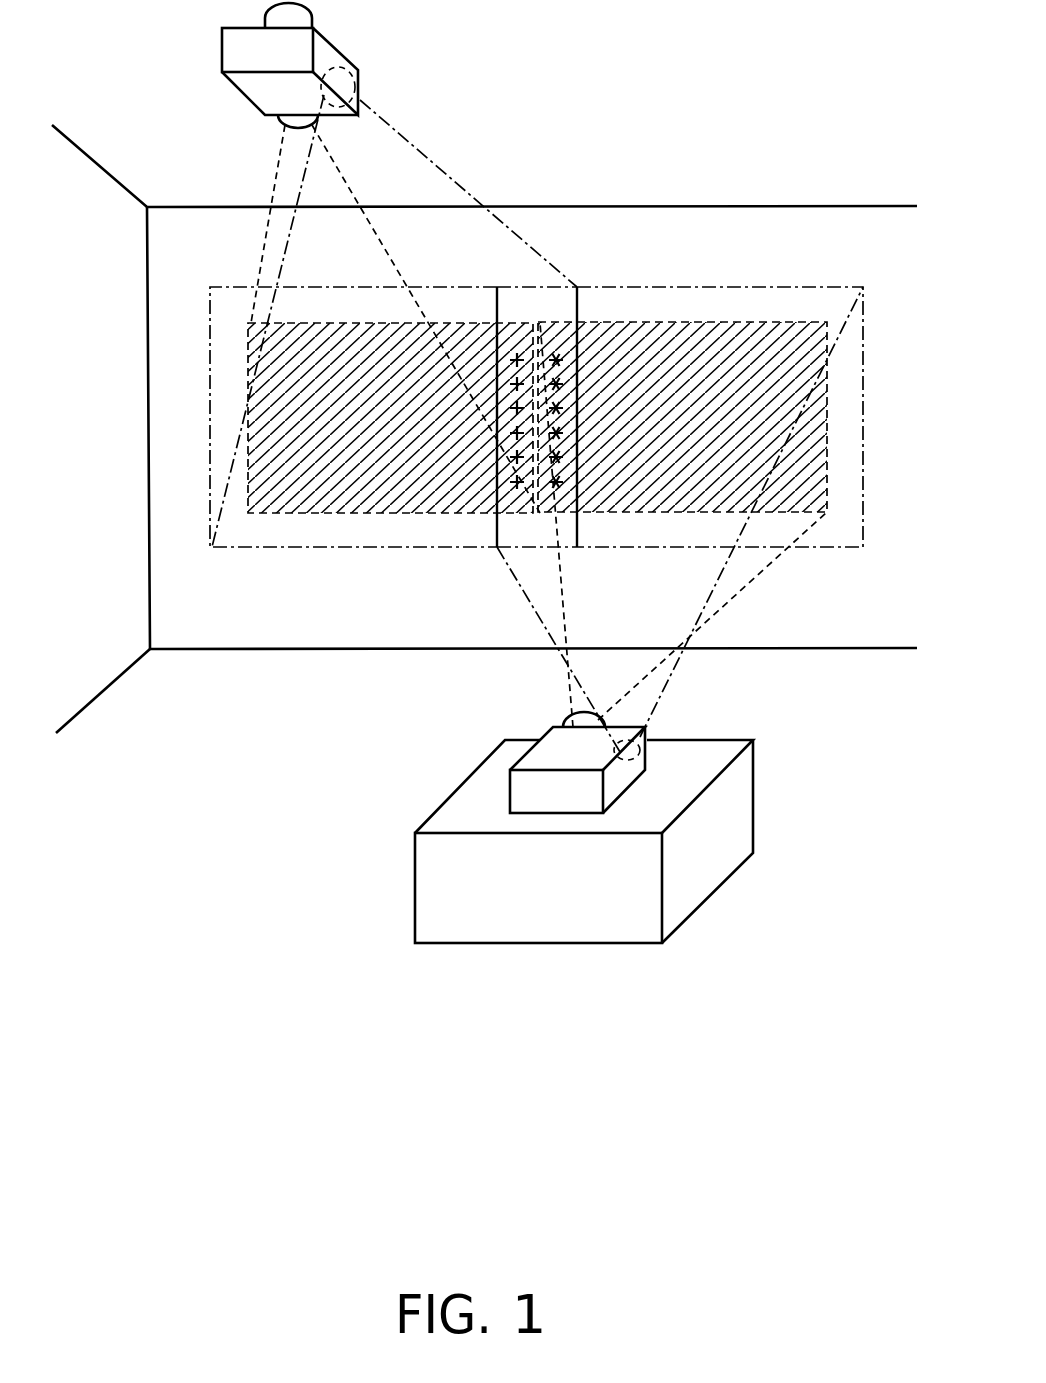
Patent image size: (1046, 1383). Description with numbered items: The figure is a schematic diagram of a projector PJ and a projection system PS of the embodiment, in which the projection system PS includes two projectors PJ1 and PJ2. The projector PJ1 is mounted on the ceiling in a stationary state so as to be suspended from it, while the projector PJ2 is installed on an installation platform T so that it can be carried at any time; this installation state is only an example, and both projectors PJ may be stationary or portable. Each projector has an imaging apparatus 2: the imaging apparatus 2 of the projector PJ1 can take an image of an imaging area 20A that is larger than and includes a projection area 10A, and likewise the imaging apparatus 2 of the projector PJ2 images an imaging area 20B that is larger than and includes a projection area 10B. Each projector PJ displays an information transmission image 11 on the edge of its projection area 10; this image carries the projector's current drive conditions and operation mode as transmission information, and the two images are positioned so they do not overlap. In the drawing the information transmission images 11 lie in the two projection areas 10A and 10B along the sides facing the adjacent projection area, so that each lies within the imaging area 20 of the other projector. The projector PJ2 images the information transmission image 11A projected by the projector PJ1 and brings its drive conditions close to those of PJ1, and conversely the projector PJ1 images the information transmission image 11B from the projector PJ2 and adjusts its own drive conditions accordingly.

The projection system PS is at (647, 100).
The projector PJ is at (339, 451).
The projector PJ1 is at (212, 37).
The projector PJ2 is at (557, 805).
The imaging apparatus 2 is at (358, 68).
The projection area 10 is at (537, 421).
The projection area 10A is at (280, 513).
The projection area 10B is at (683, 322).
The information transmission image 11 is at (521, 353).
The information transmission image 11A is at (506, 334).
The information transmission image 11B is at (555, 340).
The imaging area 20 is at (554, 429).
The imaging area 20A is at (400, 547).
The imaging area 20B is at (777, 287).
The installation platform T is at (743, 807).